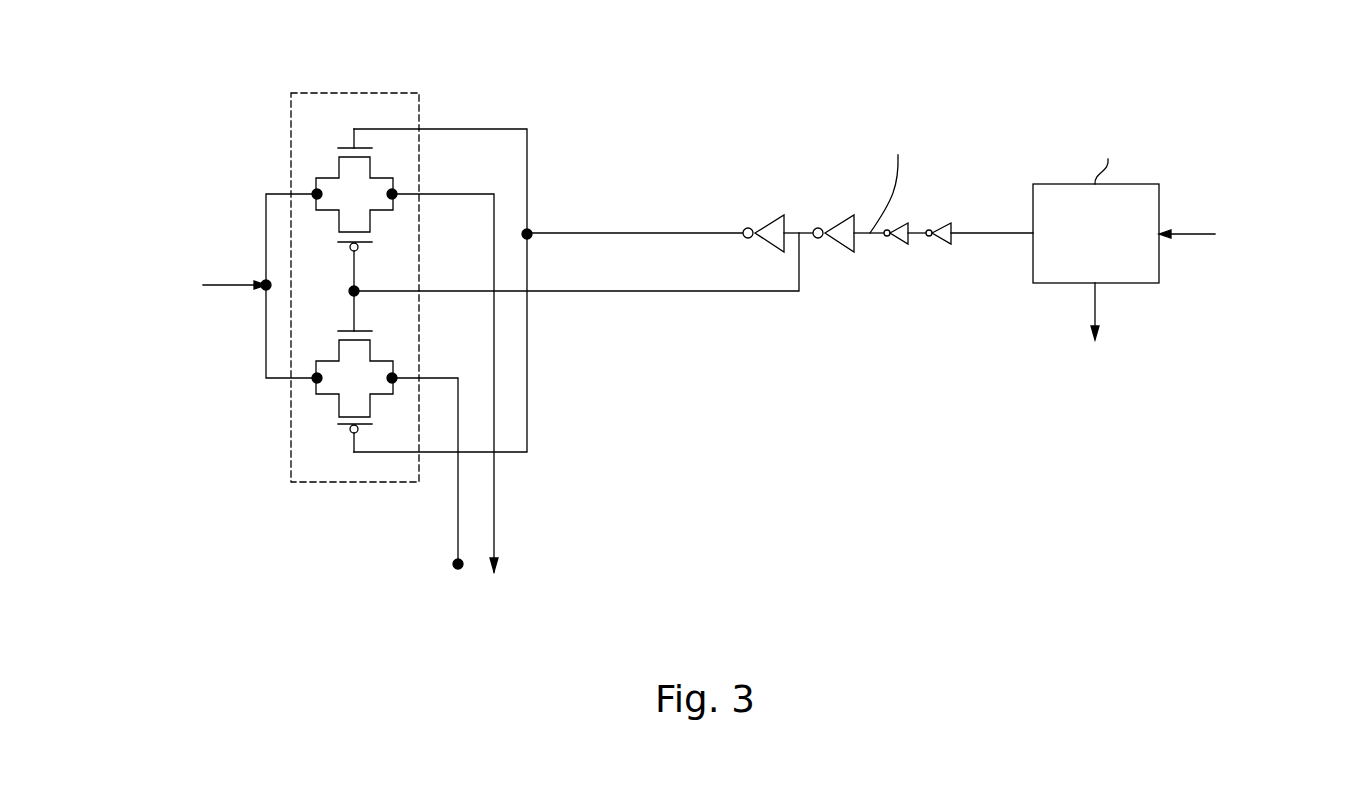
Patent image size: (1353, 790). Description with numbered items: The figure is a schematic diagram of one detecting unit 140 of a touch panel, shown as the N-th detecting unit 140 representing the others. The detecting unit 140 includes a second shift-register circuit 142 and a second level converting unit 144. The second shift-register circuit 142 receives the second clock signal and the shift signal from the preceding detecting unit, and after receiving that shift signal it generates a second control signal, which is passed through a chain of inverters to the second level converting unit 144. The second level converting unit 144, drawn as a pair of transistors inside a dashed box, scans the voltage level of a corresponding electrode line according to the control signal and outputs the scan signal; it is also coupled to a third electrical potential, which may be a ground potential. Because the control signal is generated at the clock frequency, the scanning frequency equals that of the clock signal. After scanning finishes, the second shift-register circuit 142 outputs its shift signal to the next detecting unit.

The detecting unit 140 is at (140, 45).
The second shift-register circuit 142 is at (1117, 247).
The second level converting unit 144 is at (360, 93).